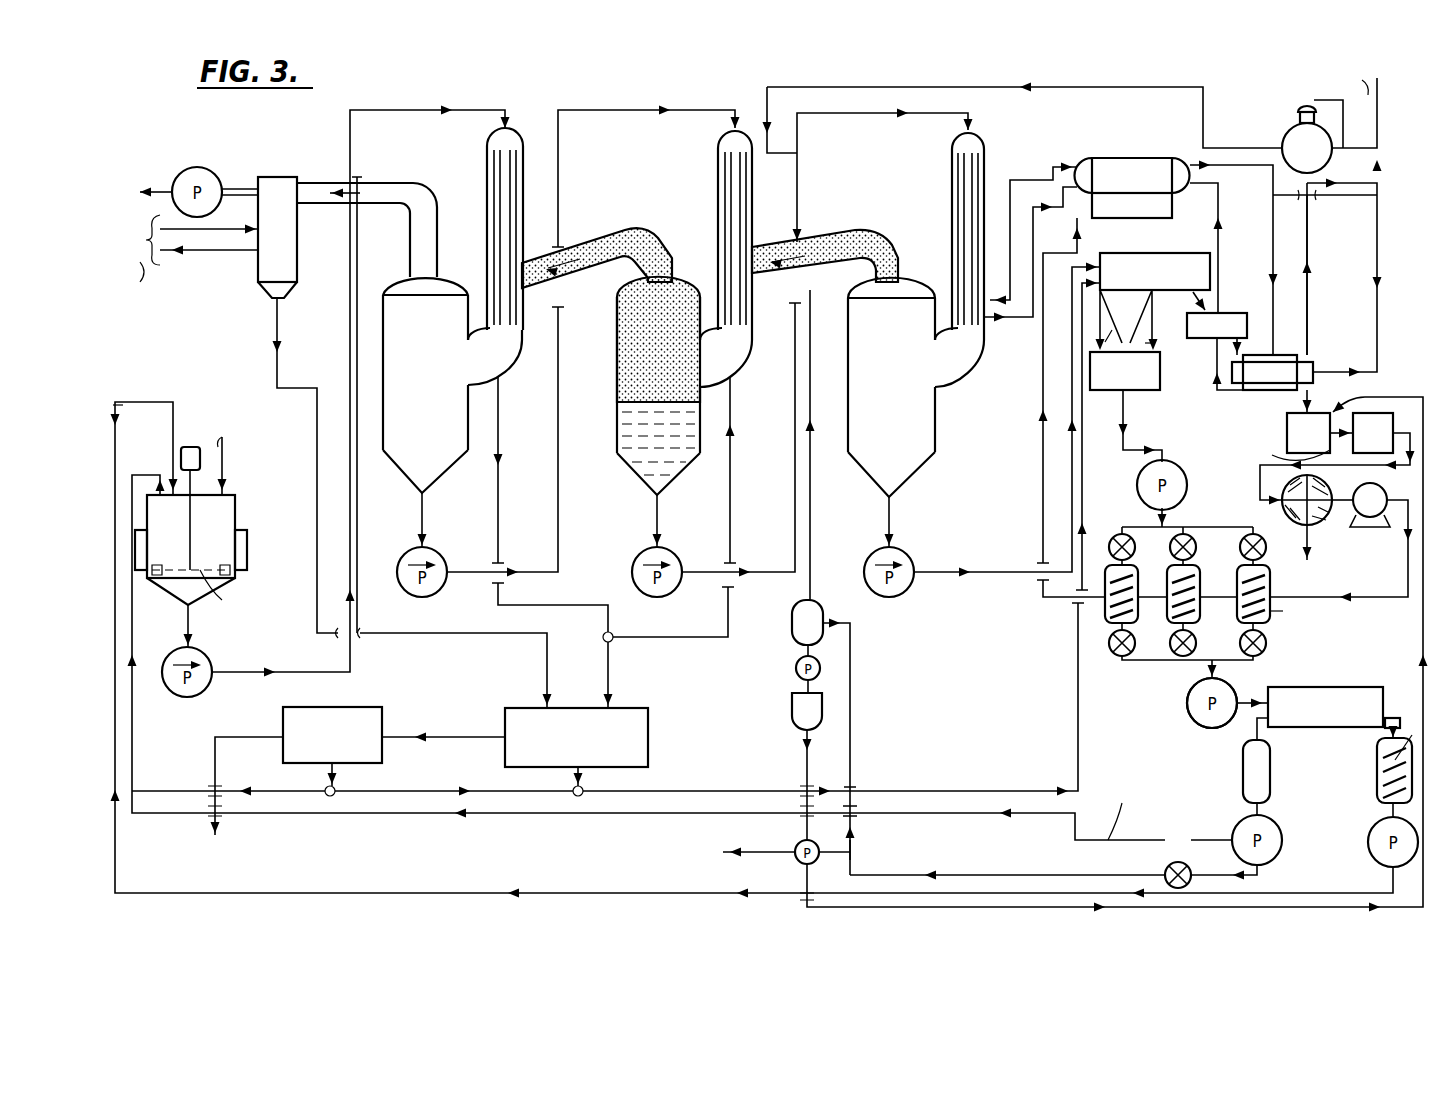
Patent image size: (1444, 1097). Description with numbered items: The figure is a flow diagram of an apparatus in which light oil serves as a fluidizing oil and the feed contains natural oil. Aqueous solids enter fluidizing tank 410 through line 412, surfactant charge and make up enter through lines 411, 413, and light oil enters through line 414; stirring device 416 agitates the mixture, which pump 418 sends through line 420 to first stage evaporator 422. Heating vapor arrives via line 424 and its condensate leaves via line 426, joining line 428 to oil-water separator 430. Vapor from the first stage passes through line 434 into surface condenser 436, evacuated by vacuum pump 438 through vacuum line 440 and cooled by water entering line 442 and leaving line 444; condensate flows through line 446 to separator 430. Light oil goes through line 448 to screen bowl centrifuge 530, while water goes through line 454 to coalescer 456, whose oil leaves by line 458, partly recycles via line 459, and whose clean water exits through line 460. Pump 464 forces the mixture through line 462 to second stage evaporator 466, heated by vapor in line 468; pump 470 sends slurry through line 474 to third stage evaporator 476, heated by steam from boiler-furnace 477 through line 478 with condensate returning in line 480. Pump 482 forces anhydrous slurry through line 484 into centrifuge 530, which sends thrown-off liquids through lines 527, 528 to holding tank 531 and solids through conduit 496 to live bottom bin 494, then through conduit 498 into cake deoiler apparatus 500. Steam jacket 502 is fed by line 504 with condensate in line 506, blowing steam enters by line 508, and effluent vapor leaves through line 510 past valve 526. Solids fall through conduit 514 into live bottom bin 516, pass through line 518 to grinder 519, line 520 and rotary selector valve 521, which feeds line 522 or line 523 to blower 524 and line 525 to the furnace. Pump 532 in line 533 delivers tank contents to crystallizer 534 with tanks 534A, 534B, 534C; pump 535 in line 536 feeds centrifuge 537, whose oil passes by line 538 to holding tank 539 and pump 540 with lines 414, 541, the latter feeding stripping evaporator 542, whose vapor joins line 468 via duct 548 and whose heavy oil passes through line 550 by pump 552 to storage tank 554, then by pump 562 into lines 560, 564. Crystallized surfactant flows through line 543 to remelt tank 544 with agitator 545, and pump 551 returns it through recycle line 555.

The fluidizing tank 410 is at (235, 514).
The surfactant charge line 411 is at (122, 412).
The aqueous solids feed line 412 is at (224, 476).
The surfactant make up line 413 is at (163, 430).
The light fluidizing oil line 414 is at (1125, 840).
The stirring device 416 is at (224, 591).
The pump 418 is at (208, 662).
The line 420 is at (445, 115).
The first stage evaporator 422 is at (390, 283).
The mixed steam and light oil vapor line 424 is at (627, 208).
The condensate line 426 is at (503, 445).
The condensate line 428 is at (732, 470).
The oil-water separator 430 is at (648, 737).
The vapor line 434 is at (420, 170).
The surface condenser 436 is at (299, 177).
The vacuum pump 438 is at (192, 170).
The vacuum line 440 is at (245, 187).
The cooling water inlet line 442 is at (229, 231).
The cooling water outlet line 444 is at (229, 255).
The condensate discharge line 446 is at (276, 322).
The light oil line 448 is at (677, 791).
The partially clarified water line 454 is at (440, 737).
The coalescer 456 is at (343, 707).
The light oil withdrawal line 458 is at (408, 791).
The oil recycle line 459 is at (268, 791).
The clean product water line 460 is at (215, 760).
The line 462 is at (662, 118).
The pump 464 is at (438, 592).
The second stage evaporator 466 is at (617, 418).
The mixed heating vapor line 468 is at (850, 232).
The pump 470 is at (680, 588).
The line 474 is at (900, 118).
The third stage evaporator 476 is at (935, 422).
The boiler-furnace 477 is at (1128, 152).
The steam line 478 is at (1022, 178).
The condensate return line 480 is at (1043, 252).
The pump 482 is at (910, 590).
The line 484 is at (982, 565).
The live bottom bin 494 is at (1225, 313).
The conduit 496 is at (1195, 300).
The conduit 498 is at (1232, 352).
The cake deoiler apparatus 500 is at (1267, 385).
The steam jacket 502 is at (1307, 355).
The steam line 504 is at (1265, 165).
The jacket condensate line 506 is at (1219, 247).
The blowing steam line 508 is at (1352, 195).
The effluent vapor line 510 is at (1112, 92).
The conduit 514 is at (1310, 403).
The live bottom bin 516 is at (1320, 433).
The line 518 is at (1285, 450).
The grinder 519 is at (1373, 433).
The line 520 is at (1260, 478).
The rotary selector valve 521 is at (1283, 515).
The line 522 is at (1310, 540).
The line 523 is at (1343, 498).
The blower 524 is at (1375, 485).
The line 525 is at (1043, 493).
The pressure sensing valve 526 is at (1288, 130).
The line 527 is at (1125, 326).
The line 528 is at (1131, 343).
The screen bowl centrifuge 530 is at (1238, 253).
The holding tank 531 is at (1125, 364).
The pump 532 is at (1172, 465).
The line 533 is at (1124, 408).
The crystallizer 534 is at (1188, 520).
The crystallizer tank 534A is at (1138, 608).
The crystallizer tank 534B is at (1200, 618).
The crystallizer tank 534C is at (1270, 625).
The pump 535 is at (1200, 720).
The line 536 is at (1205, 670).
The centrifuge 537 is at (1323, 687).
The oil mixture line 538 is at (1255, 735).
The holding tank 539 is at (1270, 790).
The pump 540 is at (1276, 822).
The line 541 is at (1098, 875).
The stripping evaporator 542 is at (792, 623).
The crystallized surfactant line 543 is at (1393, 715).
The remelt tank 544 is at (1378, 773).
The agitator 545 is at (1388, 738).
The vapor duct 548 is at (810, 488).
The line 550 is at (822, 668).
The pump 551 is at (1368, 845).
The pump 552 is at (795, 668).
The storage tank 554 is at (792, 718).
The recycle line 555 is at (1380, 883).
The line 560 is at (1365, 397).
The pump 562 is at (850, 850).
The line 564 is at (778, 852).